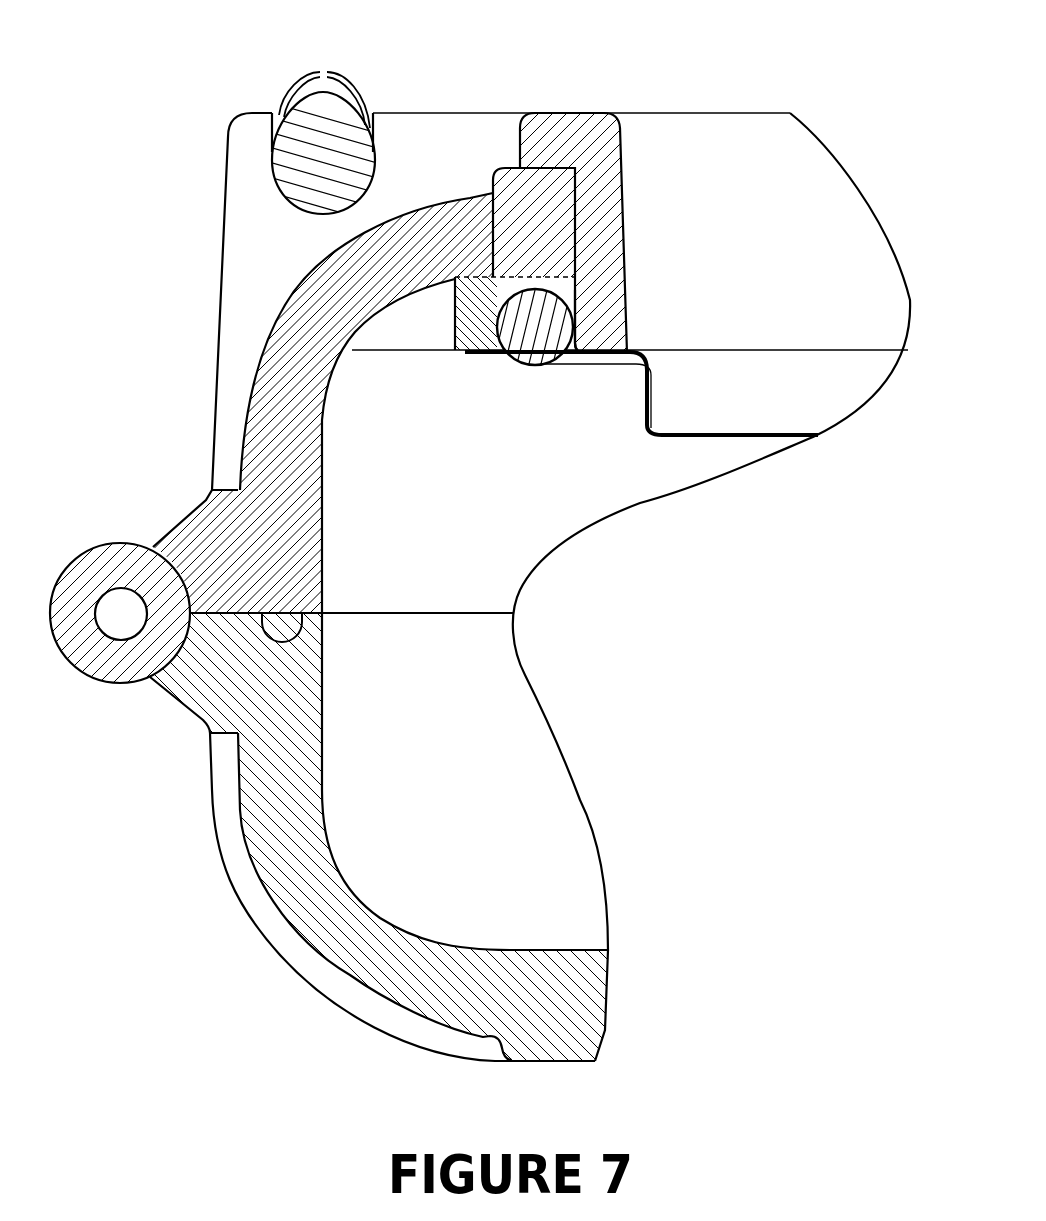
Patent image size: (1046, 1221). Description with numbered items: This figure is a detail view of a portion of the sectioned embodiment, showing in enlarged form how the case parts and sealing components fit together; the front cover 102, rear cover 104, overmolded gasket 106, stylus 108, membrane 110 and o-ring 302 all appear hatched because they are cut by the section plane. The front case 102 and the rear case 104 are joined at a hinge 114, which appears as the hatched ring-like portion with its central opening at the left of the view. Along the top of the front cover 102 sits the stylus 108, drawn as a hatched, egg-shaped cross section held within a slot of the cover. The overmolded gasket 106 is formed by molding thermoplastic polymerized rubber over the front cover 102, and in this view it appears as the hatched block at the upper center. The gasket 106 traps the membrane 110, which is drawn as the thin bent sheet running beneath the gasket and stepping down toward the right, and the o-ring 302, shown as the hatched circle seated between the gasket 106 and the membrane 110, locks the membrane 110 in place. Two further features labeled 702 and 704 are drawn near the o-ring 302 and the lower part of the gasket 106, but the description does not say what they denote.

The front cover 102 is at (290, 427).
The rear cover 104 is at (307, 890).
The overmolded gasket 106 is at (582, 140).
The stylus 108 is at (327, 151).
The membrane 110 is at (650, 390).
The hinge 114 is at (102, 667).
The o-ring 302 is at (530, 333).
The sealing lip 702 is at (492, 348).
The retainer 704 is at (577, 312).